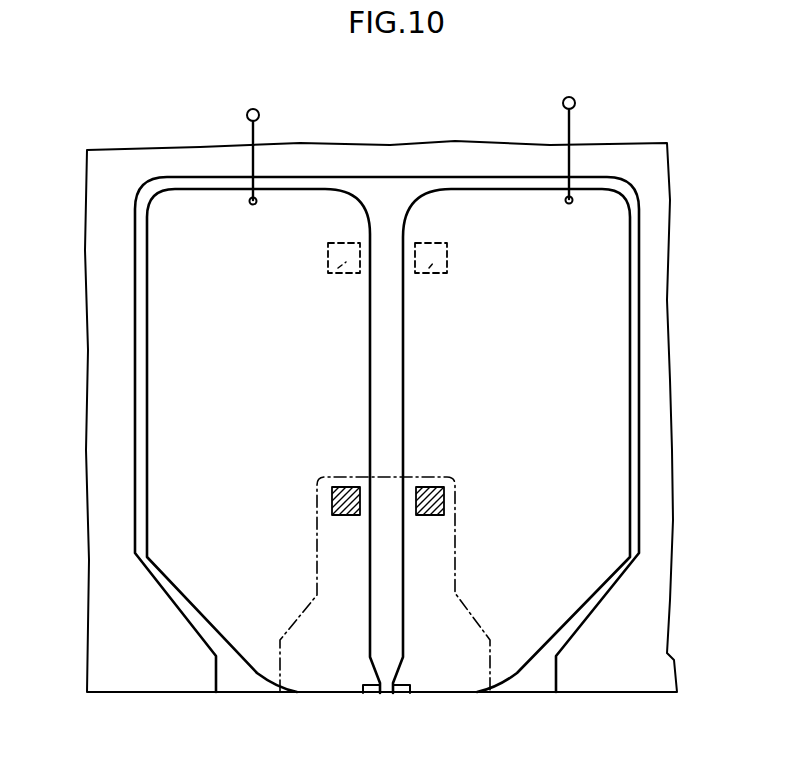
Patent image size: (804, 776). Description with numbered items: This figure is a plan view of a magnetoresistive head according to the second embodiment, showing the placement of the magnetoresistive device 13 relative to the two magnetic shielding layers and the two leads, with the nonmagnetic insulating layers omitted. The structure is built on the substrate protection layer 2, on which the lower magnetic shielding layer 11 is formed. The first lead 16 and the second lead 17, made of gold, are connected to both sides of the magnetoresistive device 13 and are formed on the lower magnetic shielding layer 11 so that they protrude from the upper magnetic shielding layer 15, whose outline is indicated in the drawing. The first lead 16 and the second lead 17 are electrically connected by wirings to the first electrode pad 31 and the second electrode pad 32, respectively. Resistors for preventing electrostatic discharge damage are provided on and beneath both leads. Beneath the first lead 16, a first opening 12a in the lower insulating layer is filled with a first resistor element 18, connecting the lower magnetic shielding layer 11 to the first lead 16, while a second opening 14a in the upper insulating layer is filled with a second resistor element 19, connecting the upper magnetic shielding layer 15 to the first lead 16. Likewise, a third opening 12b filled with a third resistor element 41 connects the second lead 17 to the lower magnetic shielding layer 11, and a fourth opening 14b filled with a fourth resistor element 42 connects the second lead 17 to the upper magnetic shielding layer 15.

The substrate protection layer 2 is at (457, 155).
The lower magnetic shielding layer 11 is at (387, 178).
The first opening 12a is at (447, 258).
The third opening 12b is at (330, 265).
The magnetoresistive device 13 is at (385, 695).
The second opening 14a is at (428, 518).
The fourth opening 14b is at (352, 517).
The upper magnetic shielding layer 15 is at (317, 573).
The first lead 16 is at (602, 330).
The second lead 17 is at (178, 350).
The first resistor element 18 is at (433, 273).
The second resistor element 19 is at (433, 488).
The first electrode pad 31 is at (569, 135).
The second electrode pad 32 is at (251, 138).
The third resistor element 41 is at (343, 273).
The fourth resistor element 42 is at (345, 490).